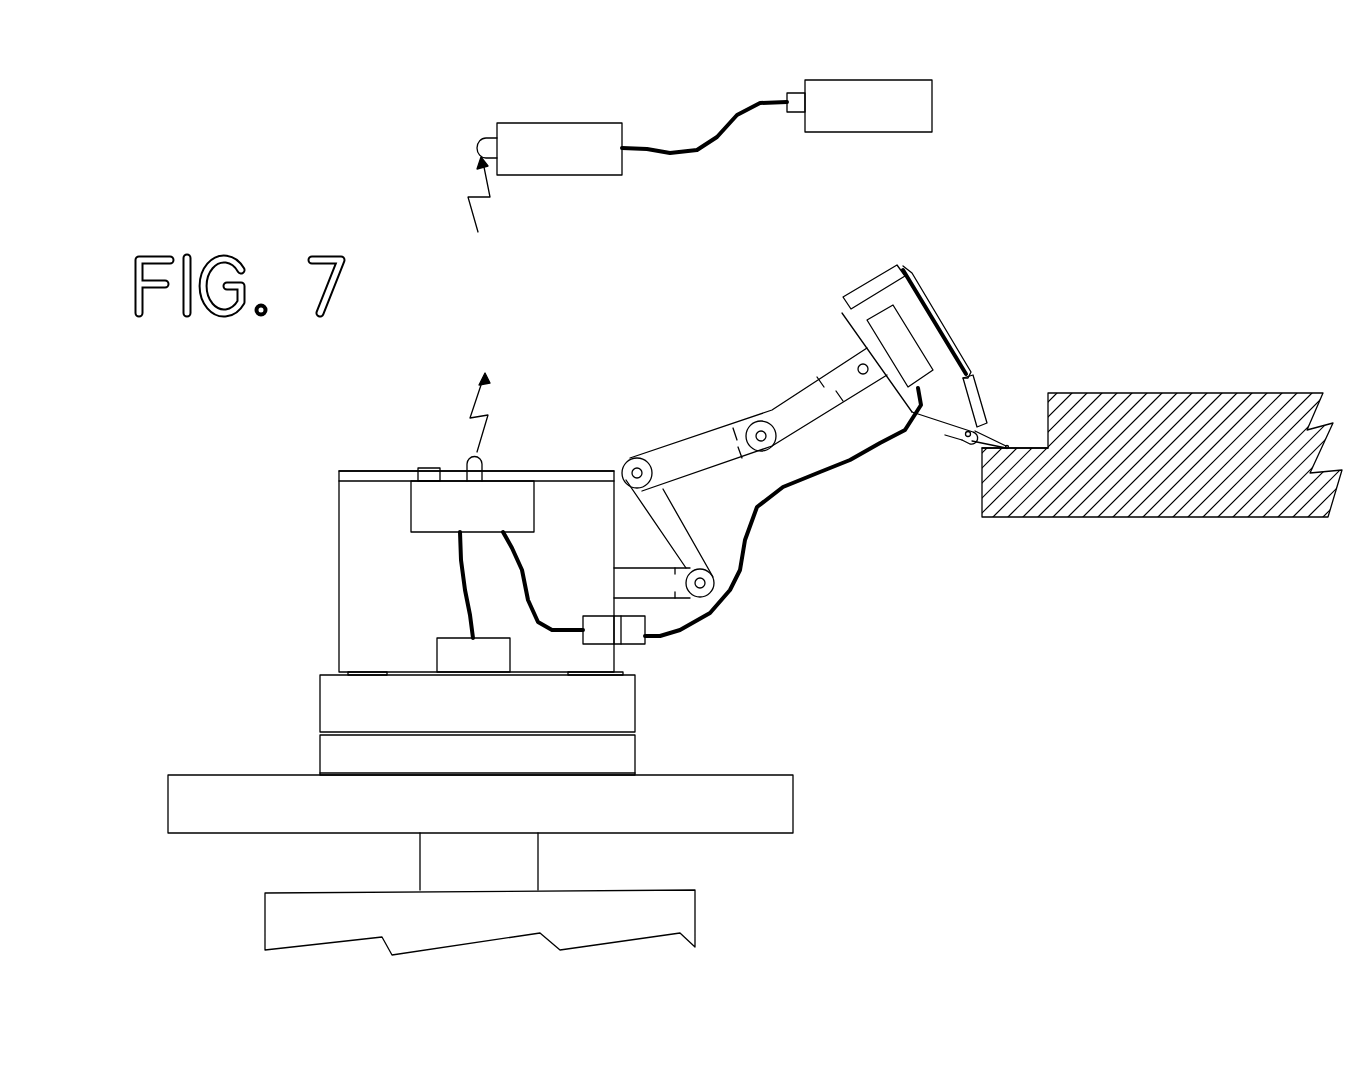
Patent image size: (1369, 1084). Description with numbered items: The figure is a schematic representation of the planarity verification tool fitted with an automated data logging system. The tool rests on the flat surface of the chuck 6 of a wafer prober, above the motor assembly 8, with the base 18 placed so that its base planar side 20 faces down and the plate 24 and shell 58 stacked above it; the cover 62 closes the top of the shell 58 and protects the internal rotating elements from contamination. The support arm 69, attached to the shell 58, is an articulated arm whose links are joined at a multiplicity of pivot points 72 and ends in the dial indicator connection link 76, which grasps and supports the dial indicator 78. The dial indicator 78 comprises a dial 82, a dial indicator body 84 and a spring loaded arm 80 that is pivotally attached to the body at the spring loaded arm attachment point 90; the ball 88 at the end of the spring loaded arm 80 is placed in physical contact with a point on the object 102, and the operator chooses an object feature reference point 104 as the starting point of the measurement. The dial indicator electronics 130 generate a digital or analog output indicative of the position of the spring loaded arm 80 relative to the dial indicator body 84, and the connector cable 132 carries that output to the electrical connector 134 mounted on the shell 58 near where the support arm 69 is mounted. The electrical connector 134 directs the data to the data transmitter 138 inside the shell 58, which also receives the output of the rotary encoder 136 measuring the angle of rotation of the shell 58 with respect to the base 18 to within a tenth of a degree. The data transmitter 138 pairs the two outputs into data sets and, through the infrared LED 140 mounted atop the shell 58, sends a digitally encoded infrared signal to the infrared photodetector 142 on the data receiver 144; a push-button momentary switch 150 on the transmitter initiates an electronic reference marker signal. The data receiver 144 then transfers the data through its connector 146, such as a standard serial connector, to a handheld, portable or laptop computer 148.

The chuck 6 is at (793, 795).
The motor assembly 8 is at (695, 915).
The base 18 is at (402, 737).
The base planar side 20 is at (593, 773).
The plate 24 is at (400, 687).
The shell 58 is at (390, 571).
The cover 62 is at (339, 471).
The support arm 69 is at (657, 600).
The pivot points 72 is at (660, 480).
The dial indicator connection link 76 is at (828, 383).
The dial indicator 78 is at (984, 512).
The spring loaded arm 80 is at (1035, 378).
The dial 82 is at (942, 307).
The dial indicator body 84 is at (858, 298).
The ball 88 is at (1055, 396).
The spring loaded arm attachment point 90 is at (1026, 350).
The object 102 is at (1113, 509).
The object feature reference point 104 is at (1077, 554).
The dial indicator electronics 130 is at (887, 335).
The connector cable 132 is at (792, 512).
The electrical connector 134 is at (649, 659).
The rotary encoder 136 is at (332, 614).
The data transmitter 138 is at (423, 497).
The infrared LED 140 is at (540, 427).
The infrared photodetector 142 is at (477, 143).
The data receiver 144 is at (557, 158).
The connector 146 is at (792, 115).
The computer 148 is at (863, 110).
The push-button momentary switch 150 is at (388, 434).